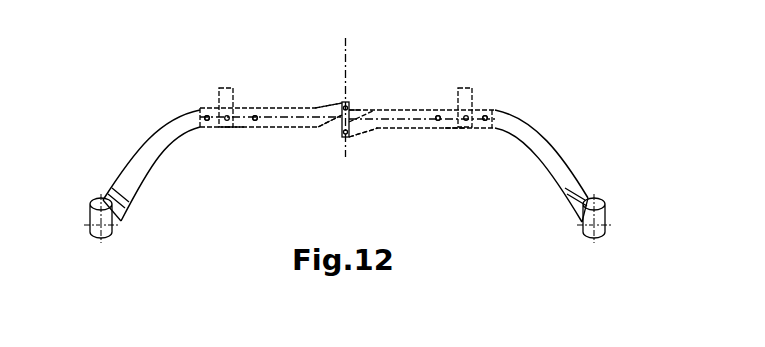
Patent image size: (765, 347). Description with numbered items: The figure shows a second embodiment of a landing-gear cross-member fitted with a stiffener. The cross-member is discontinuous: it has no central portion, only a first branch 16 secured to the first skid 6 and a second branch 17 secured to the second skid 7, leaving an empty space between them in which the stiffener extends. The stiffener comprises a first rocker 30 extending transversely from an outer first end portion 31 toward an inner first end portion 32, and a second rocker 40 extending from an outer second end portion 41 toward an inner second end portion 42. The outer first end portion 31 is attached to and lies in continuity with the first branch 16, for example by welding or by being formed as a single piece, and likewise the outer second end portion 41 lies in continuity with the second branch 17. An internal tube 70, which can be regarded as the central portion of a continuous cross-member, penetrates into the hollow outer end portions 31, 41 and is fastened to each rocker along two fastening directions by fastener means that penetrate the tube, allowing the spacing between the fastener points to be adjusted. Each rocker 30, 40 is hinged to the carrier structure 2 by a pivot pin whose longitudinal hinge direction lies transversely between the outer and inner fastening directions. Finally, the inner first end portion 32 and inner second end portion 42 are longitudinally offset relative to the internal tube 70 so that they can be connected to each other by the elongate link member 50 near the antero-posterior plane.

The carrier structure 2 is at (220, 97).
The first skid 6 is at (606, 216).
The second skid 7 is at (92, 210).
The first branch 16 is at (552, 155).
The second branch 17 is at (140, 153).
The first rocker 30 is at (395, 110).
The outer first end portion 31 is at (455, 141).
The inner first end portion 32 is at (362, 142).
The second rocker 40 is at (278, 133).
The outer second end portion 41 is at (235, 138).
The inner second end portion 42 is at (321, 101).
The elongate link member 50 is at (338, 136).
The internal tube 70 is at (357, 108).